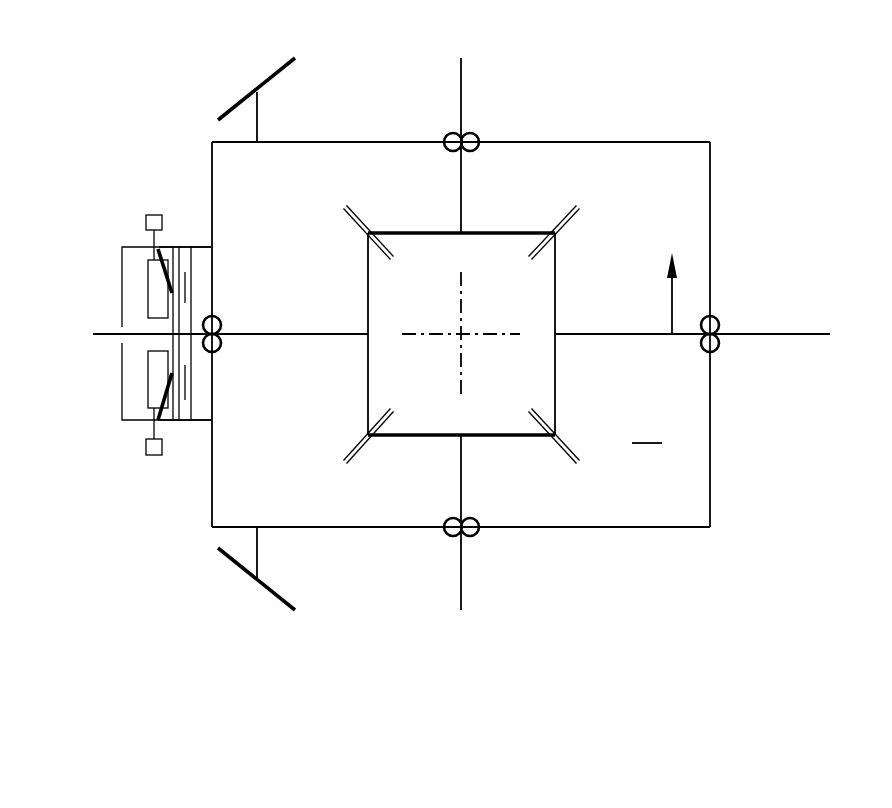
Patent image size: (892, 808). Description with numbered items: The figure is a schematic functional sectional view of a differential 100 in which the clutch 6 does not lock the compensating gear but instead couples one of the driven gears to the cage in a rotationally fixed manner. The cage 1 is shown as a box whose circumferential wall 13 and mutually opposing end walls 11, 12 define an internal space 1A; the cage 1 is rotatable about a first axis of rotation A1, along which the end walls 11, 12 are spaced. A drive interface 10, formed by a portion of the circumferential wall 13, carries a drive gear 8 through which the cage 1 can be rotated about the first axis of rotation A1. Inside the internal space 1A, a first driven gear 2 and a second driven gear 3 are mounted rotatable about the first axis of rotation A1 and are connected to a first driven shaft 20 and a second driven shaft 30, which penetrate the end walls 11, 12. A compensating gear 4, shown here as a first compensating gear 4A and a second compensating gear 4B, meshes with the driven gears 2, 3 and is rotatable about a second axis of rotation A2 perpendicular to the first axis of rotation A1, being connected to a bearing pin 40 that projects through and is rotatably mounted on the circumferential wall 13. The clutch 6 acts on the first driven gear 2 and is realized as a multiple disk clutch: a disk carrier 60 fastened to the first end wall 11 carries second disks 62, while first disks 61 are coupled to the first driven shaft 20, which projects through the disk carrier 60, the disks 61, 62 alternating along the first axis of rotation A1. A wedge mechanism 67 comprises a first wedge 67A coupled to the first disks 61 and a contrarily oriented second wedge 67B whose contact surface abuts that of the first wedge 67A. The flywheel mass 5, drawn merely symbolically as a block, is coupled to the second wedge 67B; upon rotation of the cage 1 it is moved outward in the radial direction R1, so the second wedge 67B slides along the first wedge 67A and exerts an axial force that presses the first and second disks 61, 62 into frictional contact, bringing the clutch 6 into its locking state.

The differential 100 is at (140, 62).
The cage 1 is at (660, 142).
The internal space 1A is at (647, 426).
The first end wall 11 is at (212, 158).
The second end wall 12 is at (710, 228).
The circumferential wall 13 is at (662, 527).
The first driven gear 2 is at (368, 271).
The second driven gear 3 is at (555, 272).
The compensating gear 4 is at (462, 336).
The first compensating gear 4A is at (408, 232).
The second compensating gear 4B is at (408, 437).
The flywheel mass 5 is at (146, 447).
The clutch 6 is at (112, 228).
The drive gear 8 is at (263, 80).
The drive interface 10 is at (257, 142).
The first driven shaft 20 is at (293, 336).
The second driven shaft 30 is at (792, 334).
The bearing pin 40 is at (463, 182).
The disk carrier 60 is at (210, 426).
The first disks 61 is at (185, 283).
The second disks 62 is at (185, 385).
The wedge mechanism 67 is at (128, 377).
The first wedge 67A is at (165, 412).
The second wedge 67B is at (155, 390).
The first axis of rotation A1 is at (493, 337).
The second axis of rotation A2 is at (461, 296).
The radial direction R1 is at (658, 293).